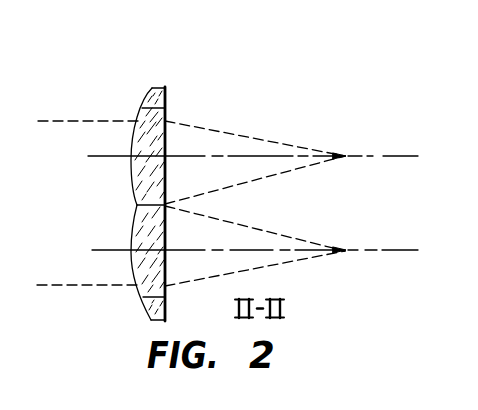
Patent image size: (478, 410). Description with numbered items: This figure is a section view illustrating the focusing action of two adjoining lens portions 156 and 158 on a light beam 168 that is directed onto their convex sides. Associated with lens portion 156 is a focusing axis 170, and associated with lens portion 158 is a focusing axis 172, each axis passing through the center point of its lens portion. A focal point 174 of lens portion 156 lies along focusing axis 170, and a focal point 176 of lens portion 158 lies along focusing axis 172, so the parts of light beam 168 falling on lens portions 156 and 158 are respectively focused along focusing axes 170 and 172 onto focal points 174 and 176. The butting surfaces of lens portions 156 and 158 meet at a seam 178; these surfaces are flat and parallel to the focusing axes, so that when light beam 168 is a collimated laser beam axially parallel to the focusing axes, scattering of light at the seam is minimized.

The lens portion 156 is at (148, 311).
The lens portion 158 is at (148, 97).
The light beam 168 is at (88, 120).
The focusing axis 170 is at (392, 251).
The focusing axis 172 is at (392, 155).
The focal point 174 is at (345, 249).
The focal point 176 is at (344, 155).
The seam 178 is at (137, 207).